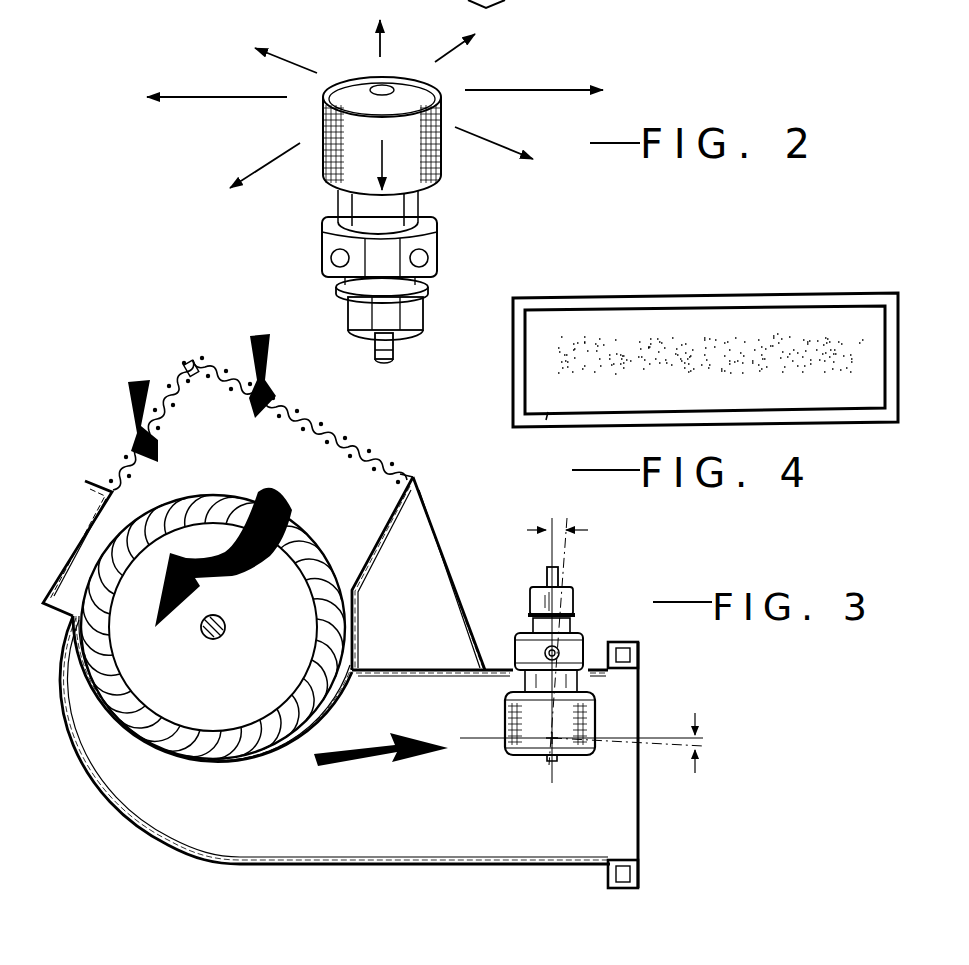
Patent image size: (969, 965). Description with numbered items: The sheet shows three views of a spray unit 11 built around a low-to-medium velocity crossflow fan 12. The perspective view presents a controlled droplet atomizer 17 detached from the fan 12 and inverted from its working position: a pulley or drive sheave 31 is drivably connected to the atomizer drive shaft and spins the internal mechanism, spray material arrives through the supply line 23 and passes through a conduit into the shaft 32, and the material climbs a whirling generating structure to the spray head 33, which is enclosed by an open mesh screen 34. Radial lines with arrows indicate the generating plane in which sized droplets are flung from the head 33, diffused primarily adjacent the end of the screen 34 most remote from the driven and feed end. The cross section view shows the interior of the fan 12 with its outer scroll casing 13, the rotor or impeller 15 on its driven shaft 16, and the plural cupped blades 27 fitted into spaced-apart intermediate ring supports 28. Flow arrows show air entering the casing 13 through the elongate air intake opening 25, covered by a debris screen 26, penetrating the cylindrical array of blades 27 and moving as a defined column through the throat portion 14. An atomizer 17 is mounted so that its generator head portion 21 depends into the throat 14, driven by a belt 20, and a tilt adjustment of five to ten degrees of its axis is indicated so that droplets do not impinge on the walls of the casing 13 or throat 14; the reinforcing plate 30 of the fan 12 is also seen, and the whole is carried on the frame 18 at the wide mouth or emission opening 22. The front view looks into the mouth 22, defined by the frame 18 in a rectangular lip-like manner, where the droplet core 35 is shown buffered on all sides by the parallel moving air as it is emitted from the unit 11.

In FIG. 3, the spray unit 11 is at (420, 614).
In FIG. 3, the crossflow fan 12 is at (470, 571).
In FIG. 3, the outer scroll casing 13 is at (124, 822).
In FIG. 3, the throat portion 14 is at (381, 772).
In FIG. 3, the rotor or impeller 15 is at (230, 603).
In FIG. 3, the drive shaft 16 is at (227, 617).
In FIG. 2, the controlled droplet atomizer 17 is at (375, 191).
In FIG. 3, the controlled droplet atomizer 17 is at (575, 659).
In FIG. 4, the frame 18 is at (547, 419).
In FIG. 3, the frame 18 is at (640, 868).
In FIG. 3, the drive belt 20 is at (577, 614).
In FIG. 3, the generator head portion 21 is at (546, 732).
In FIG. 4, the wide mouth or emission opening 22 is at (793, 320).
In FIG. 3, the wide mouth or emission opening 22 is at (627, 795).
In FIG. 3, the supply line 23 is at (559, 572).
In FIG. 3, the air intake opening 25 is at (165, 377).
In FIG. 3, the screen 26 is at (370, 459).
In FIG. 3, the blades 27 is at (200, 500).
In FIG. 3, the intermediate ring supports 28 is at (223, 691).
In FIG. 3, the plate 30 is at (450, 538).
In FIG. 2, the pulley or drive sheave 31 is at (340, 282).
In FIG. 2, the shaft 32 is at (393, 337).
In FIG. 2, the spray head 33 is at (300, 193).
In FIG. 3, the spray head 33 is at (613, 711).
In FIG. 2, the open mesh screen 34 is at (441, 113).
In FIG. 3, the open mesh screen 34 is at (507, 721).
In FIG. 4, the droplet core 35 is at (644, 337).